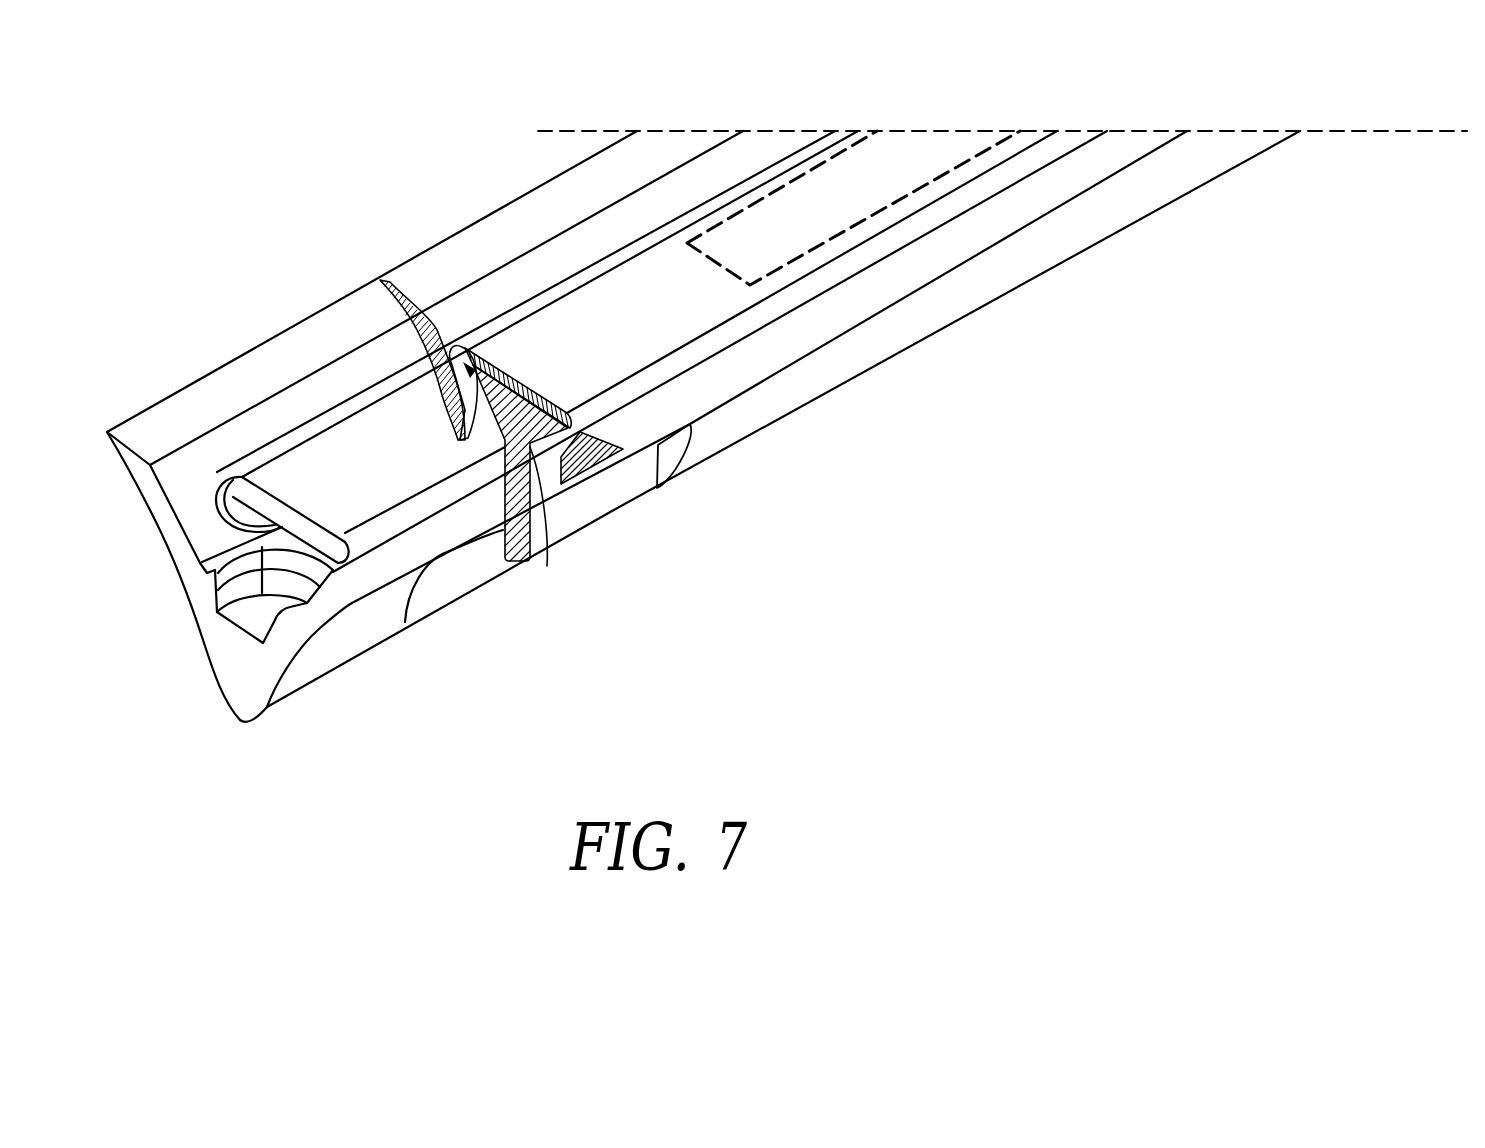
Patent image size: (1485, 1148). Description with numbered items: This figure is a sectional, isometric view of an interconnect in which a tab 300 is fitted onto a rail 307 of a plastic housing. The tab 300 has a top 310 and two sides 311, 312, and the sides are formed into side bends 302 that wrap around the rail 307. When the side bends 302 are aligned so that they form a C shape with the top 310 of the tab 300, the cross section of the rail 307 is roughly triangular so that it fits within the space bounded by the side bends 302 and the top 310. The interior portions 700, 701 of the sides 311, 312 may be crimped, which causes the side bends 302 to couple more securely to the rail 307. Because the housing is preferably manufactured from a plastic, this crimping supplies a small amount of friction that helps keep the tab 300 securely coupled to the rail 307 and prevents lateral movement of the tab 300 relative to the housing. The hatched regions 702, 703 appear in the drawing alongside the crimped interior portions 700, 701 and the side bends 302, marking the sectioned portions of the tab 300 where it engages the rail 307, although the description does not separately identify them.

The tab 300 is at (632, 340).
The side bends 302 is at (460, 440).
The rail 307 is at (516, 565).
The top 310 is at (928, 178).
The side 311 is at (878, 287).
The side 312 is at (518, 212).
The interior portion 700 is at (386, 283).
The interior portion 701 is at (615, 438).
The angled flange section 702 is at (450, 387).
The hatched section 703 is at (576, 435).